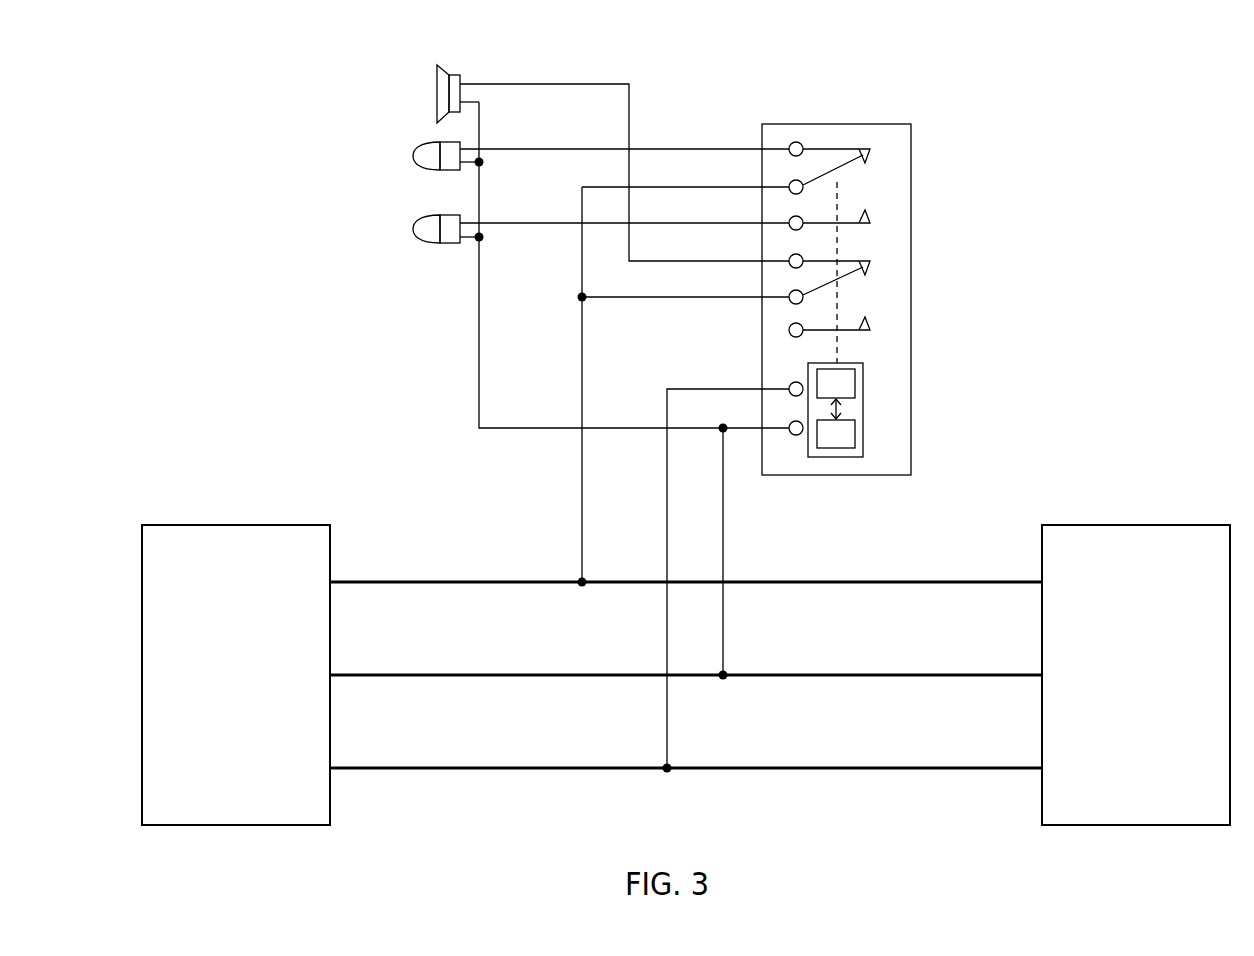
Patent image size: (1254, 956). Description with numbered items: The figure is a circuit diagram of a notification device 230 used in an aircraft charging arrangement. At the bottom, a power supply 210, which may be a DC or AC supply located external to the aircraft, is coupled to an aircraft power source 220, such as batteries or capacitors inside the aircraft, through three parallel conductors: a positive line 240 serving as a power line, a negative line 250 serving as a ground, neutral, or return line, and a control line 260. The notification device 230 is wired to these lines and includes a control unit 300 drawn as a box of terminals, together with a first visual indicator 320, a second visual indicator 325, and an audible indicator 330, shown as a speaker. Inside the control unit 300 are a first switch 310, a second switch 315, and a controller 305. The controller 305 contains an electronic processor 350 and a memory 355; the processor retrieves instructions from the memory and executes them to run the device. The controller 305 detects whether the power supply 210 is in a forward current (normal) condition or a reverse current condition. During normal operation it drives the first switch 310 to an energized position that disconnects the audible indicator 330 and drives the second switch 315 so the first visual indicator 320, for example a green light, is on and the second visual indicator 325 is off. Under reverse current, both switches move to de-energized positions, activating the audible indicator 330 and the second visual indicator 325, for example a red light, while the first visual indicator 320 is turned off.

The power supply 210 is at (197, 525).
The aircraft power source 220 is at (1097, 525).
The notification device 230 is at (708, 60).
The positive line 240 is at (383, 584).
The negative line 250 is at (383, 677).
The control line 260 is at (383, 770).
The control unit 300 is at (869, 317).
The controller 305 is at (900, 409).
The first switch 310 is at (792, 305).
The second switch 315 is at (792, 193).
The first visual indicator 320 is at (440, 245).
The second visual indicator 325 is at (440, 172).
The audible indicator 330 is at (449, 71).
The electronic processor 350 is at (857, 371).
The memory 355 is at (836, 457).